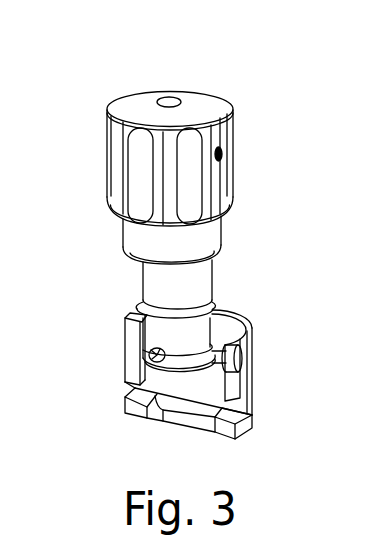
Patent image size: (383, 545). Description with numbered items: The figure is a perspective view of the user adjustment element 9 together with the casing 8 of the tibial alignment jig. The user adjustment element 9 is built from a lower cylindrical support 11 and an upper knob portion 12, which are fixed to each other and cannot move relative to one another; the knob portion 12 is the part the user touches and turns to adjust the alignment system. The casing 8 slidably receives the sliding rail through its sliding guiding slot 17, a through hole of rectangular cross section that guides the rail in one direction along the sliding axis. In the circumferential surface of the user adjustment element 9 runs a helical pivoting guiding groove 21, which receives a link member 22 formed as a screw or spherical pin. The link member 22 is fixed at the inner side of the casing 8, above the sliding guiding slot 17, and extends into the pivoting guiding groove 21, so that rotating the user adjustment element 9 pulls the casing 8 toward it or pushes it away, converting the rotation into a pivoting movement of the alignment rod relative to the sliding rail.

The casing 8 is at (181, 363).
The user adjustment element 9 is at (183, 167).
The cylindrical support 11 is at (190, 287).
The knob portion 12 is at (205, 195).
The sliding guiding slot 17 is at (253, 405).
The pivoting guiding groove 21 is at (126, 321).
The link member 22 is at (252, 350).